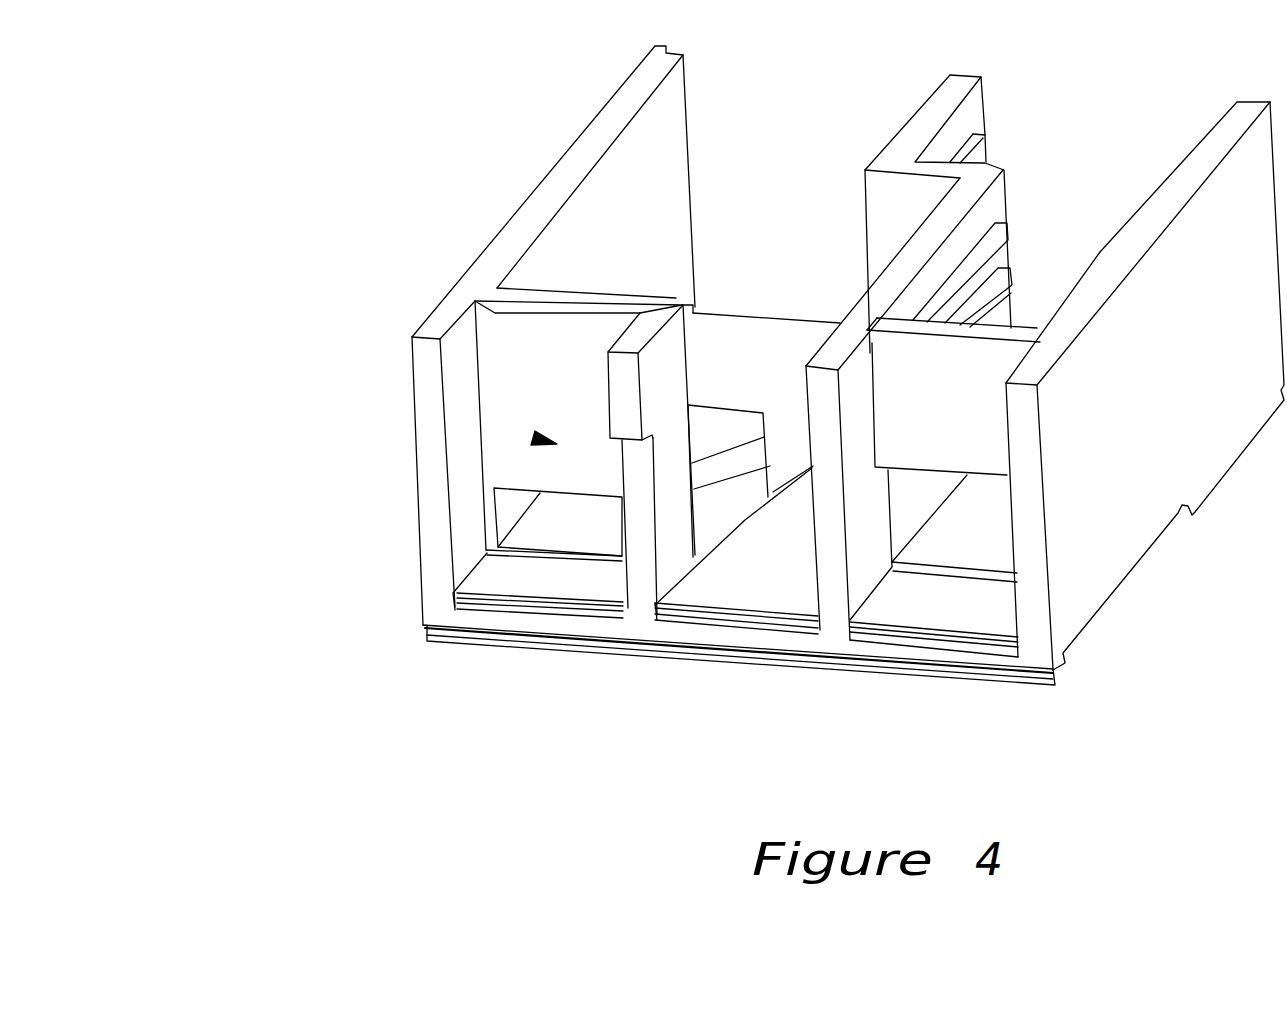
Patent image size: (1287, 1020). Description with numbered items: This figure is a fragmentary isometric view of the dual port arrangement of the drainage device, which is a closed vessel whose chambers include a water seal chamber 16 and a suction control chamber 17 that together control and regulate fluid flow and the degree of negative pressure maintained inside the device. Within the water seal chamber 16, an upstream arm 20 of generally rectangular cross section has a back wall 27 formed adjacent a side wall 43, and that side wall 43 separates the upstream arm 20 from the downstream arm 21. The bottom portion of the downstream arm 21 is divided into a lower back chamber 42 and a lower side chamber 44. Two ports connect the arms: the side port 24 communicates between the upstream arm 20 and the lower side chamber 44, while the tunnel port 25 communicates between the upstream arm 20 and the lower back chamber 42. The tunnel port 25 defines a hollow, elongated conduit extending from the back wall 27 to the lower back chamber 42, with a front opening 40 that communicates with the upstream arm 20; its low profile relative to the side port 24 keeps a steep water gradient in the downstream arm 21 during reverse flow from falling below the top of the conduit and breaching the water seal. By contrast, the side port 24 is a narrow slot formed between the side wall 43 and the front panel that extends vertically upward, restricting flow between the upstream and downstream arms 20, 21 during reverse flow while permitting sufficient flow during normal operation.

The water seal chamber 16 is at (535, 438).
The suction control chamber 17 is at (955, 436).
The upstream arm 20 is at (525, 350).
The downstream arm 21 is at (763, 575).
The side port 24 is at (638, 540).
The tunnel port 25 is at (723, 493).
The back wall 27 is at (557, 307).
The front opening 40 is at (565, 520).
The lower back chamber 42 is at (742, 373).
The side wall 43 is at (663, 375).
The lower side chamber 44 is at (792, 578).